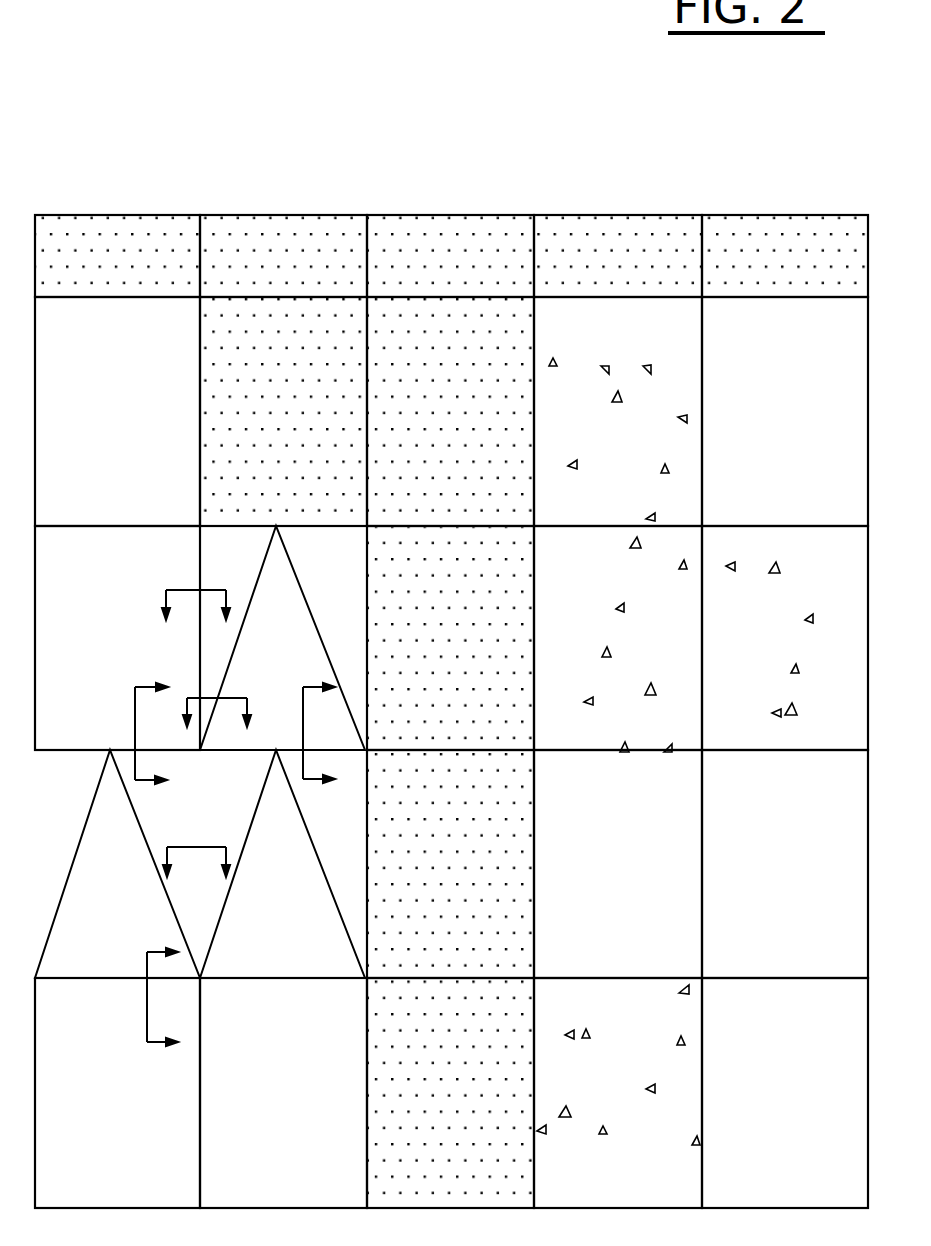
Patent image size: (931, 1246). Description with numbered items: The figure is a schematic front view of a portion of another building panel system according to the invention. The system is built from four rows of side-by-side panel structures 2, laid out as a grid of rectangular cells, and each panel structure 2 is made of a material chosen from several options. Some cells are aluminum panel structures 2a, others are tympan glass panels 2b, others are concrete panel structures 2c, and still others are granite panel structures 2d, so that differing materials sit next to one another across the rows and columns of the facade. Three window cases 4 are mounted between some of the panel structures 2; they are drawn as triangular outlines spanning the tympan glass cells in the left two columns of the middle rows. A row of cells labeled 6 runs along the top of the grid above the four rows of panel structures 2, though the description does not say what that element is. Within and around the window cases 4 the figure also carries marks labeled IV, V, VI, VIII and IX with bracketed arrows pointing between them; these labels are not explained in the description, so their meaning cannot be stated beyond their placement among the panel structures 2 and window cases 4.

The panel structure 2 is at (622, 901).
The aluminum panel structure 2a is at (306, 446).
The tympan glass panel 2b is at (120, 446).
The concrete panel structure 2c is at (638, 449).
The granite panel structure 2d is at (800, 468).
The window case 4 is at (345, 623).
The edge strip 6 is at (172, 282).
The section IV is at (147, 653).
The section V is at (153, 910).
The section VI is at (302, 654).
The section VIII is at (140, 591).
The section IX is at (176, 719).